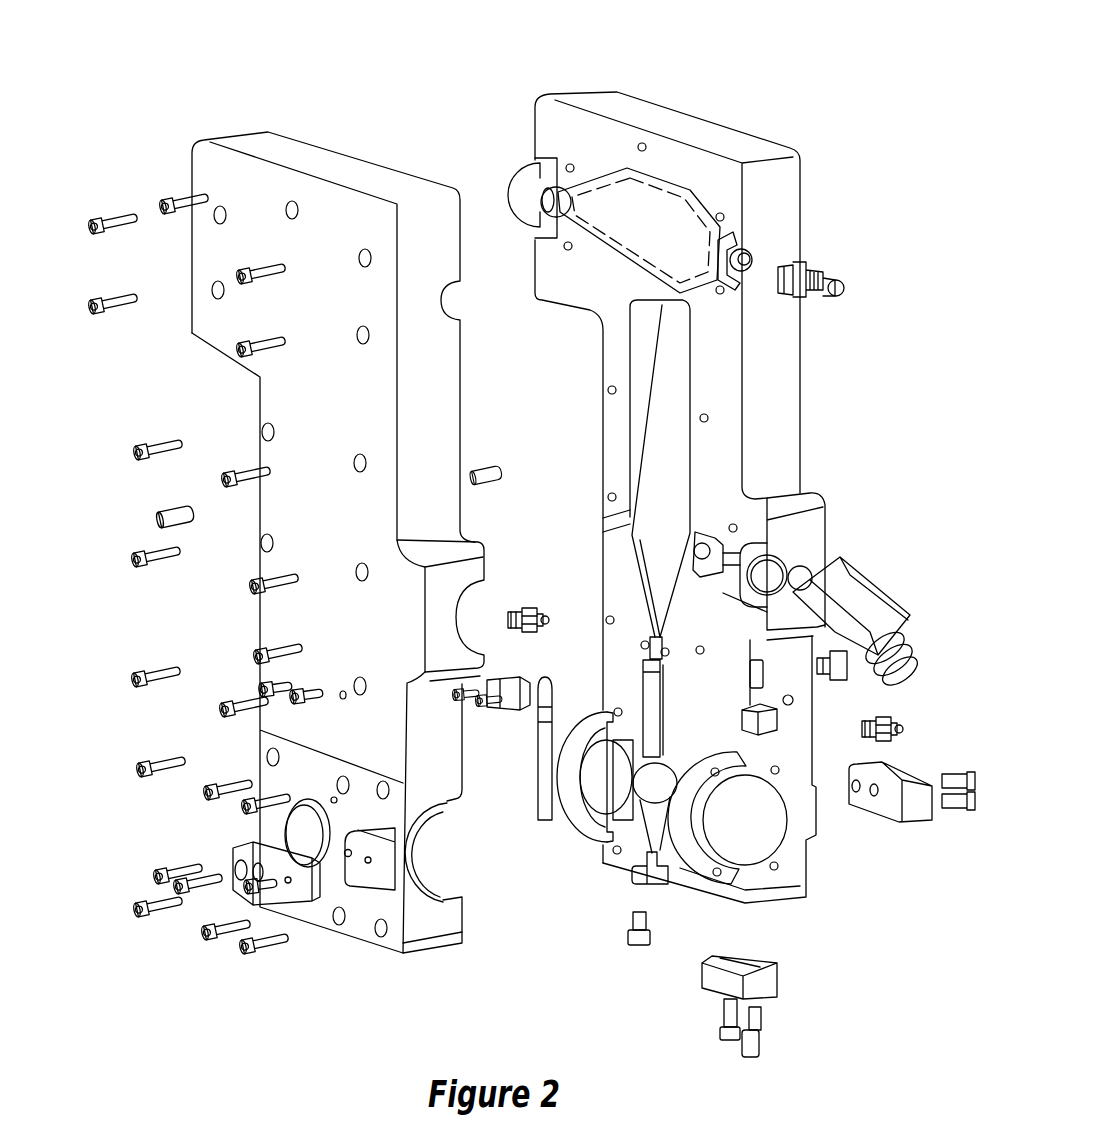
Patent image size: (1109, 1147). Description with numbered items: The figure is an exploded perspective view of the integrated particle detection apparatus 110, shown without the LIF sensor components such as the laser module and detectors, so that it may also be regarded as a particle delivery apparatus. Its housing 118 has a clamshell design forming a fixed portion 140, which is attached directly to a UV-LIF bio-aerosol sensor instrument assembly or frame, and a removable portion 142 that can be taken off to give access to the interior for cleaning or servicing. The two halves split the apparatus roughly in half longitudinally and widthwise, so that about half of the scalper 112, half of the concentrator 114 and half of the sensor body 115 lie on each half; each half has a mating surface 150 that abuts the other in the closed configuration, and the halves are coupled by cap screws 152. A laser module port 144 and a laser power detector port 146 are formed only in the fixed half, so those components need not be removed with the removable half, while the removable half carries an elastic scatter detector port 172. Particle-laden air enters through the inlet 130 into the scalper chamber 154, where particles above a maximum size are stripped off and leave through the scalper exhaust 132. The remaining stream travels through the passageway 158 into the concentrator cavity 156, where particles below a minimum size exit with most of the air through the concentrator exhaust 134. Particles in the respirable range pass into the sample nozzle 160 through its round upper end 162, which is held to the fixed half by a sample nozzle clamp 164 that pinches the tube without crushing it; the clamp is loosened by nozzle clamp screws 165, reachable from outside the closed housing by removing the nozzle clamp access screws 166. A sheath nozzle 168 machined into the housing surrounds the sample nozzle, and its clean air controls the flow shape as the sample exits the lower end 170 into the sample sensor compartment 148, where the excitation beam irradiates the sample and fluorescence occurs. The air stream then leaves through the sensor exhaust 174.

The integrated particle detection apparatus 110 is at (243, 122).
The scalper 112 is at (600, 160).
The concentrator 114 is at (623, 562).
The sensor body 115 is at (313, 913).
The housing 118 is at (222, 322).
The particle detection apparatus inlet 130 is at (537, 157).
The scalper exhaust 132 is at (845, 287).
The concentrator exhaust 134 is at (893, 673).
The fixed portion 140 is at (770, 410).
The removable portion 142 is at (443, 192).
The laser module port 144 is at (773, 852).
The laser power detector port 146 is at (573, 822).
The sample sensor compartment 148 is at (650, 845).
The mating surface 150 is at (750, 513).
The cap screws 152 is at (160, 677).
The scalper chamber 154 is at (690, 237).
The concentrator cavity 156 is at (650, 582).
The passageway 158 is at (640, 380).
The sample nozzle 160 is at (535, 793).
The upper end 162 is at (547, 677).
The sample nozzle clamp 164 is at (512, 680).
The nozzle clamp screws 165 is at (487, 705).
The nozzle clamp access screws 166 is at (257, 690).
The sheath nozzle 168 is at (653, 745).
The lower end 170 is at (552, 822).
The elastic scatter detector port 172 is at (333, 870).
The sensor exhaust 174 is at (650, 878).